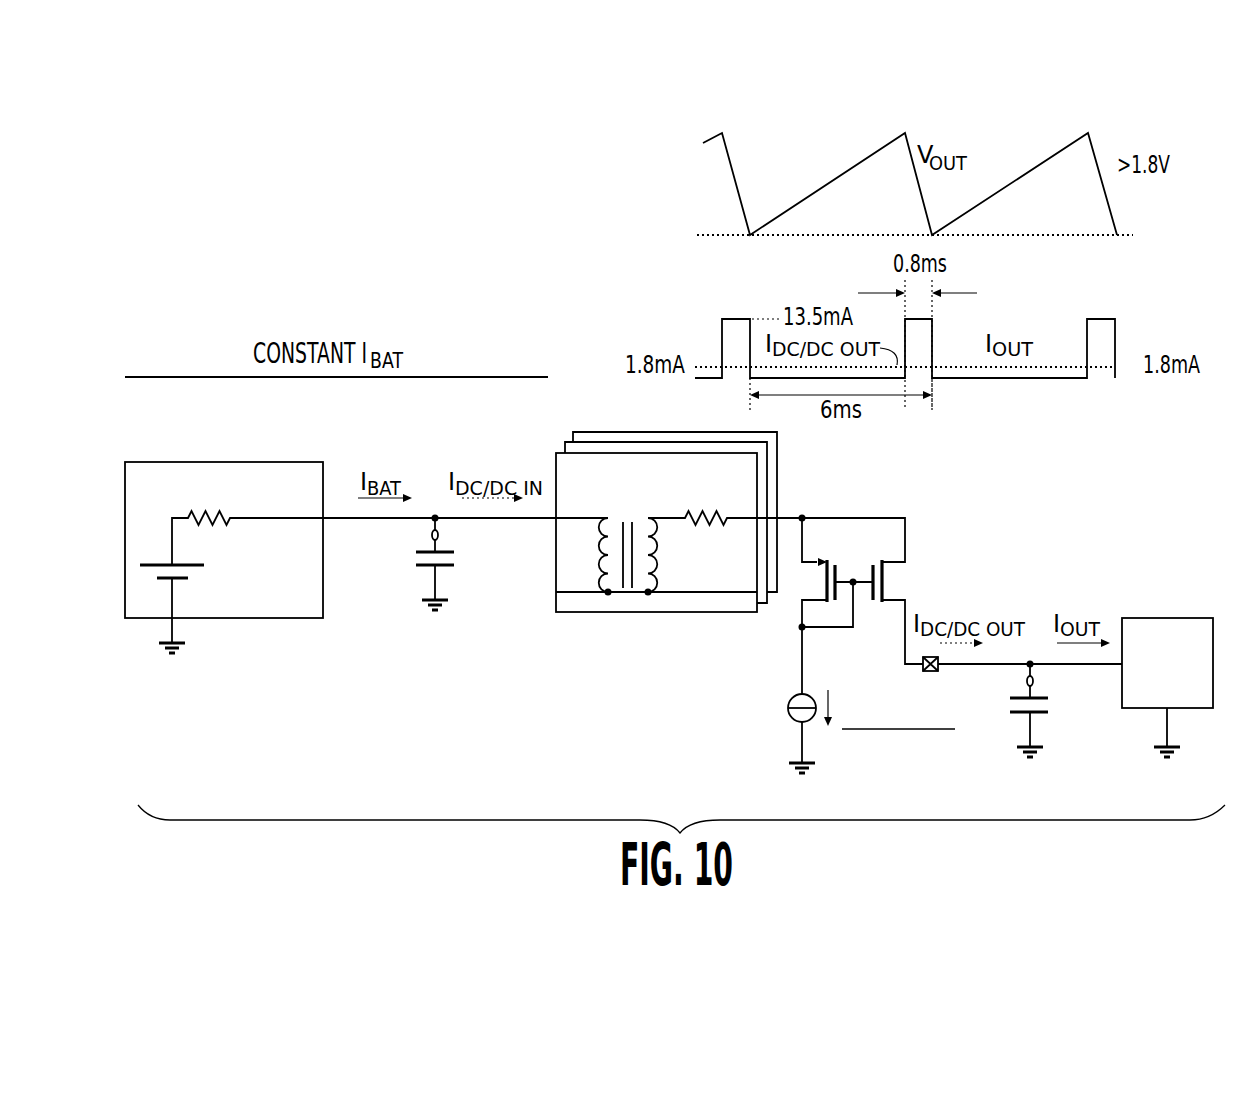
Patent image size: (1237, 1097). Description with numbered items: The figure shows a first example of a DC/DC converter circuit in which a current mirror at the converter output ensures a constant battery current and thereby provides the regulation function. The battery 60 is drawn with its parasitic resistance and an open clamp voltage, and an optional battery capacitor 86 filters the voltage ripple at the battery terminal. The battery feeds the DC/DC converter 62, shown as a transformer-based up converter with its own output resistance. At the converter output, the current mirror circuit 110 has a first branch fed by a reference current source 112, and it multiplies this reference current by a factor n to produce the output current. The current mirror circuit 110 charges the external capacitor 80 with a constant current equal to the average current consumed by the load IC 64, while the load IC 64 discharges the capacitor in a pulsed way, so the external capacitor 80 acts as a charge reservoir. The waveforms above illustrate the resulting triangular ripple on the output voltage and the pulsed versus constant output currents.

The battery 60 is at (307, 619).
The battery capacitor 86 is at (440, 575).
The DC/DC converter 62 is at (573, 615).
The current mirror circuit 110 is at (909, 755).
The reference current source 112 is at (790, 706).
The external capacitor 80 is at (1033, 716).
The load IC 64 is at (1203, 709).